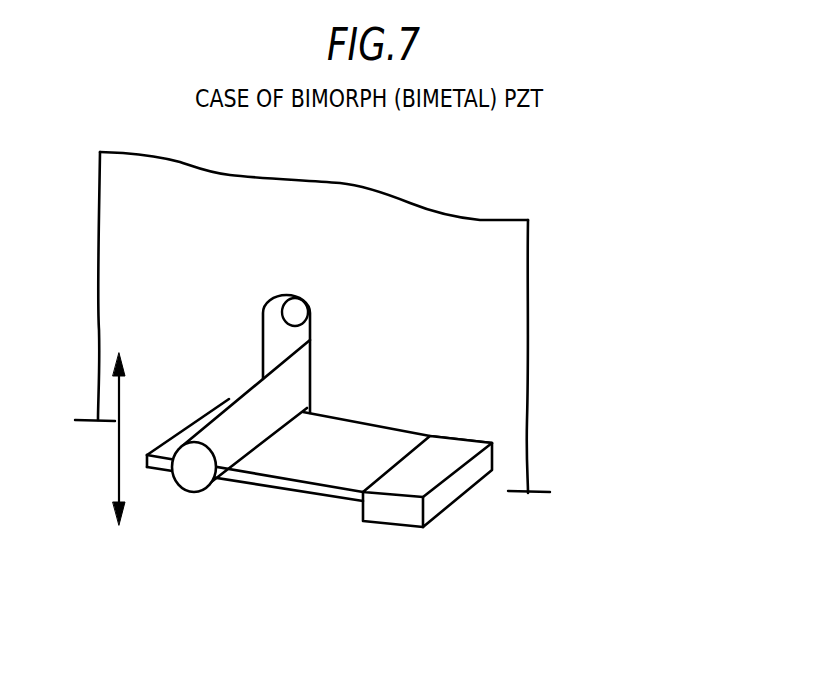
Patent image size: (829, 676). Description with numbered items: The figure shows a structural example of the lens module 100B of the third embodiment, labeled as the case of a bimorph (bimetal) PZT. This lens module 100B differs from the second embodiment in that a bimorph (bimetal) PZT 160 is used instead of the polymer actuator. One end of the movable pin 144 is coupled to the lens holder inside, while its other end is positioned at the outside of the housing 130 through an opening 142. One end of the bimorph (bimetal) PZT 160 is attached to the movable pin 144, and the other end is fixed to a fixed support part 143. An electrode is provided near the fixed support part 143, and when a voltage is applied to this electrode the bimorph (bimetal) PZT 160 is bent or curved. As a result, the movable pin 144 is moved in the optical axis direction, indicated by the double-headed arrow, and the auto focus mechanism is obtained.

The lens module 100B is at (585, 171).
The housing 130 is at (497, 337).
The opening 142 is at (306, 322).
The fixed support part 143 is at (458, 487).
The movable pin 144 is at (223, 437).
The bimorph (bimetal) PZT 160 is at (305, 496).